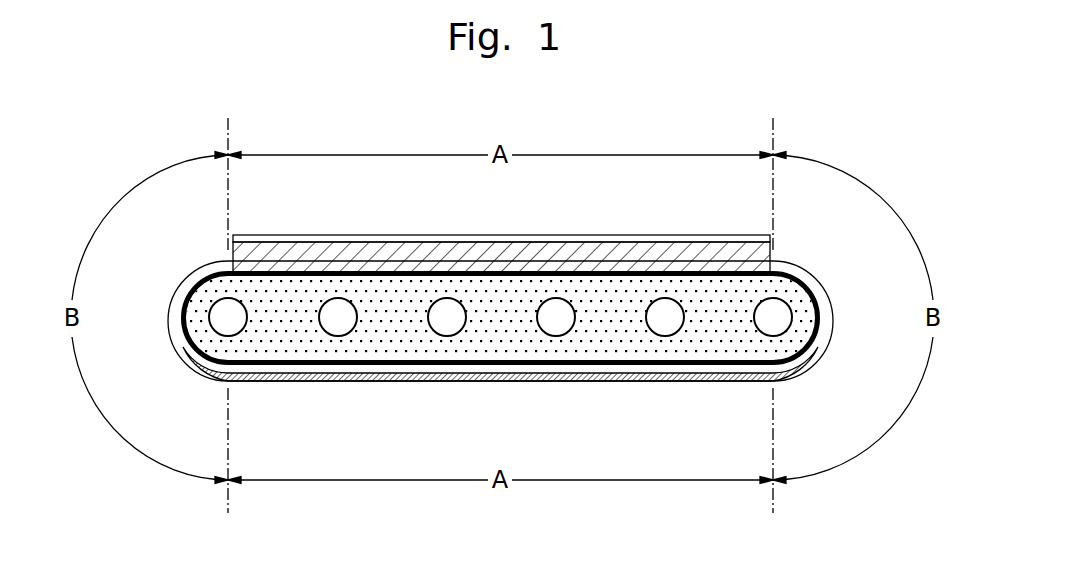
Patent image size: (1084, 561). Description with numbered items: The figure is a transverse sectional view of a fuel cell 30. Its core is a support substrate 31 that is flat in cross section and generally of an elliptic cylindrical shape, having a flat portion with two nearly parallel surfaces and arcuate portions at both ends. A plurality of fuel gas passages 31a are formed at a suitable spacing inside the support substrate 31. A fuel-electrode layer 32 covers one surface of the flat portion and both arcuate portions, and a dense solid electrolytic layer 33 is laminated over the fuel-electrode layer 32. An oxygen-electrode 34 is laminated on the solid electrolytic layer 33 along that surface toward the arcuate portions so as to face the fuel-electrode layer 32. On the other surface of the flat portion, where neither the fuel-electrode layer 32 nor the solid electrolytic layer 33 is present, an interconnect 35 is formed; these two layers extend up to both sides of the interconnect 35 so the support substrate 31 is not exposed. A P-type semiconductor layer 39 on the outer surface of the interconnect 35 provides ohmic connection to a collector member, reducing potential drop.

The fuel cell 30 is at (822, 150).
The support substrate 31 is at (798, 288).
The fuel gas passages 31a is at (665, 298).
The fuel-electrode layer 32 is at (615, 355).
The solid electrolytic layer 33 is at (174, 308).
The oxygen-electrode 34 is at (400, 384).
The interconnect 35 is at (337, 254).
The P-type semiconductor layer 39 is at (567, 238).